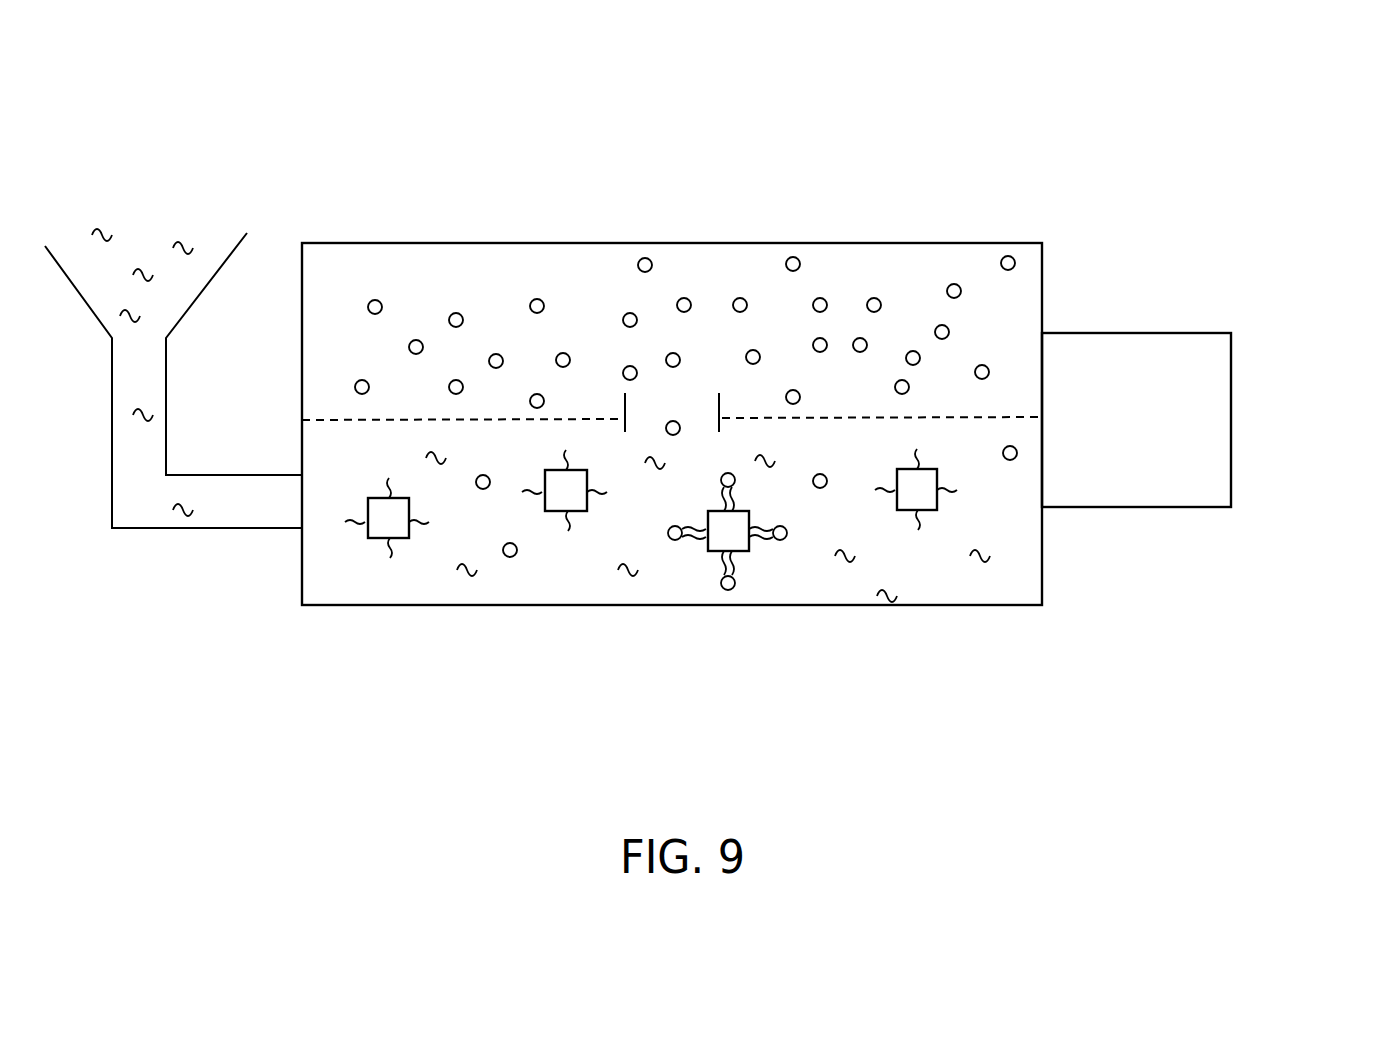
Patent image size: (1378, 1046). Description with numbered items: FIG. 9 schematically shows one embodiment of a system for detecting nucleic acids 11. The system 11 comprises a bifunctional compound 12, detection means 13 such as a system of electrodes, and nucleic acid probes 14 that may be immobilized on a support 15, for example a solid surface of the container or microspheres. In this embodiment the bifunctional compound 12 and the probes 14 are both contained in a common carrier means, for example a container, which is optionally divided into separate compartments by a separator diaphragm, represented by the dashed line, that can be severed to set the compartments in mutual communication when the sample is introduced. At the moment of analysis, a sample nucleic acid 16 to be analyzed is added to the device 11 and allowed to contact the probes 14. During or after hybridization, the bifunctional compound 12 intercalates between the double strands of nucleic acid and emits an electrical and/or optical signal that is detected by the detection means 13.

The system for detecting nucleic acids 11 is at (1138, 227).
The bifunctional compound 12 is at (383, 295).
The detection means 13 is at (1213, 432).
The nucleic acid probes 14 is at (568, 542).
The support 15 is at (937, 518).
The sample nucleic acid 16 is at (842, 560).